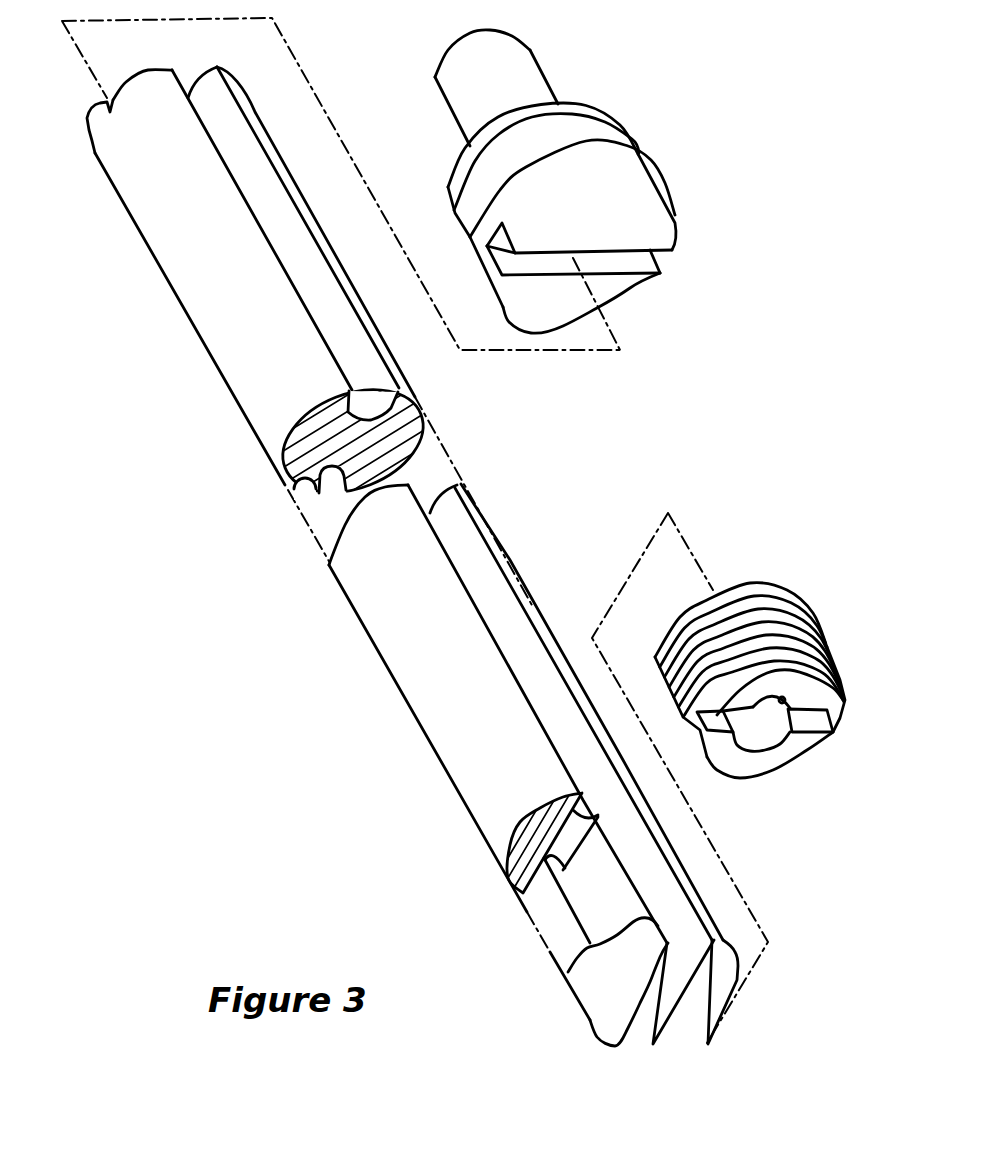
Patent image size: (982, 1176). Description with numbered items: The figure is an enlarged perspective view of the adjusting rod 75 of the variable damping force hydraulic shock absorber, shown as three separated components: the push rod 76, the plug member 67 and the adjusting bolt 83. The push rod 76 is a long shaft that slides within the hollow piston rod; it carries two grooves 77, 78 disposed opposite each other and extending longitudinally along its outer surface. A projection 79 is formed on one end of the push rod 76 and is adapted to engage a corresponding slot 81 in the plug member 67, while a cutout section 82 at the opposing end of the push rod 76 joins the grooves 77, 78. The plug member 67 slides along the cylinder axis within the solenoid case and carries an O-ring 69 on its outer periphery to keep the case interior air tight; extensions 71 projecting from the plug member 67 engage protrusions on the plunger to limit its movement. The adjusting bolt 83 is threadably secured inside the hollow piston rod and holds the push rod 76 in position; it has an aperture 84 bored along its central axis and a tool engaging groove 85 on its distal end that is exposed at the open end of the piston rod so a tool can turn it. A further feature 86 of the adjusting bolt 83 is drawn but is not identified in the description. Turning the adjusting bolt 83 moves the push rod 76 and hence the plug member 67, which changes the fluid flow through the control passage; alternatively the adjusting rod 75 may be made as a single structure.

The plug member 67 is at (633, 182).
The O-ring 69 is at (593, 127).
The extension 71 is at (523, 62).
The adjusting rod 75 is at (294, 696).
The push rod 76 is at (452, 753).
The groove 77 is at (310, 493).
The groove 78 is at (377, 387).
The projection 79 is at (95, 130).
The slot 81 is at (647, 263).
The cutout section 82 is at (658, 1010).
The adjusting bolt 83 is at (752, 580).
The aperture 84 is at (785, 699).
The tool engaging groove 85 is at (808, 723).
The nut slot 86 is at (832, 697).